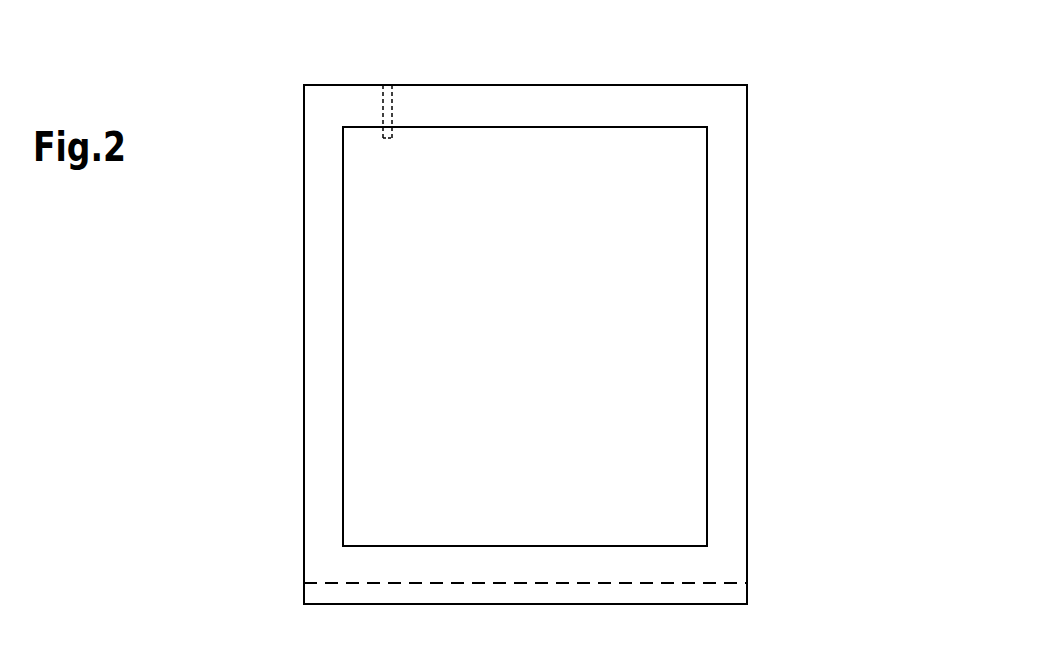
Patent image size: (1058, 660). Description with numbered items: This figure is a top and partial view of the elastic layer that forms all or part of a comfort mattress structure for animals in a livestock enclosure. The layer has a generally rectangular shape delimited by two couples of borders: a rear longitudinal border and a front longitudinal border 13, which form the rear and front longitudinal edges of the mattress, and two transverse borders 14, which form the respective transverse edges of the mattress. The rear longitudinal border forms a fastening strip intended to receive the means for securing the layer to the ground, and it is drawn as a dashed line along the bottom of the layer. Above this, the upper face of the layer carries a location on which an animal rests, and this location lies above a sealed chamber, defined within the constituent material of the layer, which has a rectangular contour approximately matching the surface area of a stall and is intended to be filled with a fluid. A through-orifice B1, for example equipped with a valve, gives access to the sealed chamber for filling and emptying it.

The front longitudinal border 13 is at (569, 79).
The transverse borders 14 is at (272, 334).
The through-orifice B1 is at (391, 108).